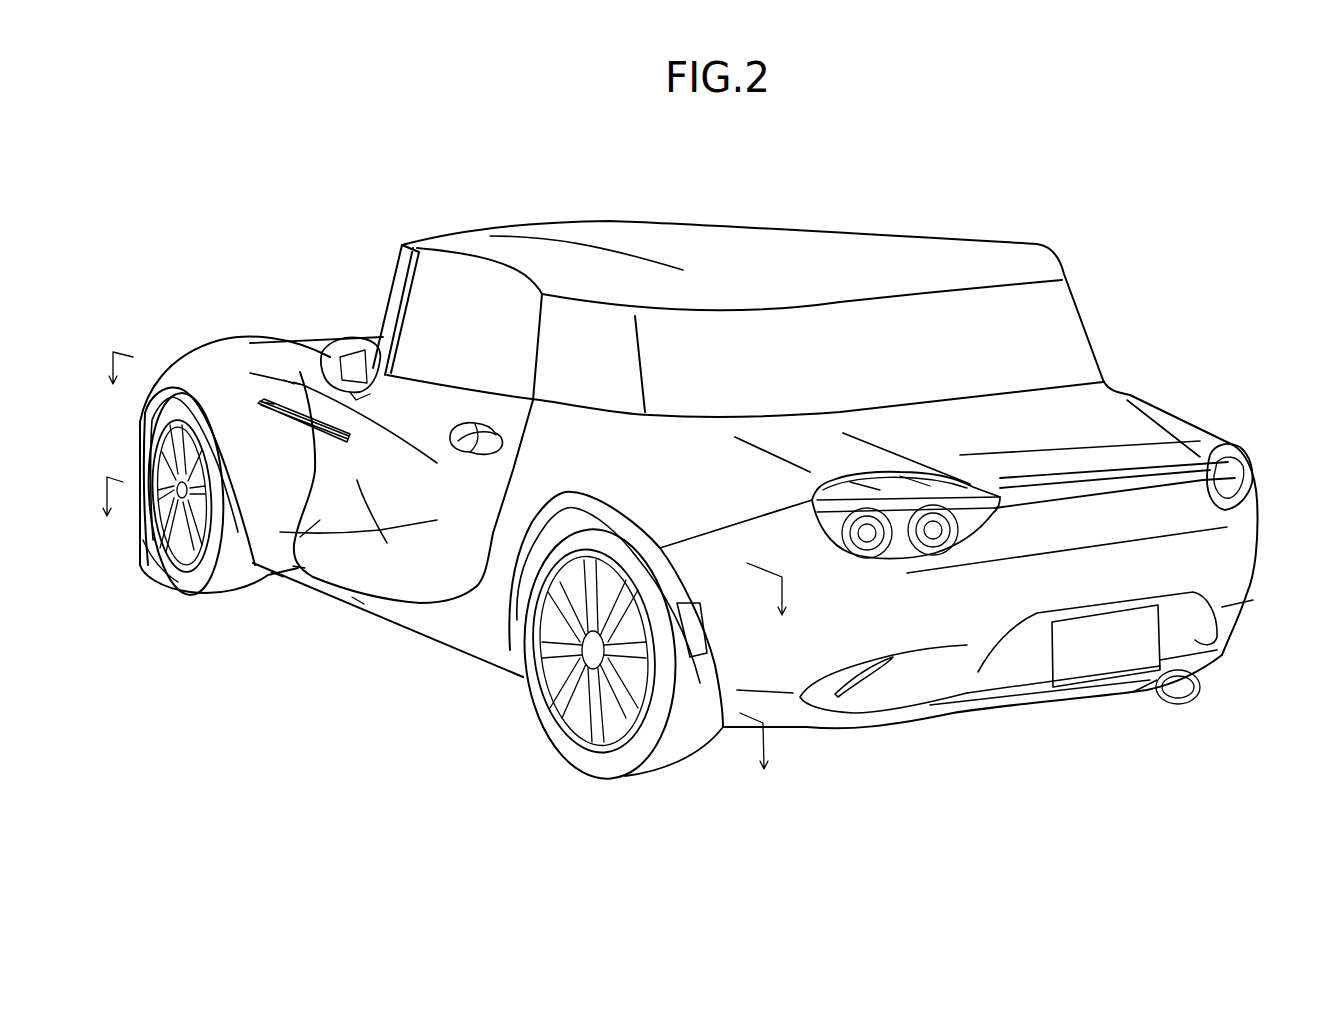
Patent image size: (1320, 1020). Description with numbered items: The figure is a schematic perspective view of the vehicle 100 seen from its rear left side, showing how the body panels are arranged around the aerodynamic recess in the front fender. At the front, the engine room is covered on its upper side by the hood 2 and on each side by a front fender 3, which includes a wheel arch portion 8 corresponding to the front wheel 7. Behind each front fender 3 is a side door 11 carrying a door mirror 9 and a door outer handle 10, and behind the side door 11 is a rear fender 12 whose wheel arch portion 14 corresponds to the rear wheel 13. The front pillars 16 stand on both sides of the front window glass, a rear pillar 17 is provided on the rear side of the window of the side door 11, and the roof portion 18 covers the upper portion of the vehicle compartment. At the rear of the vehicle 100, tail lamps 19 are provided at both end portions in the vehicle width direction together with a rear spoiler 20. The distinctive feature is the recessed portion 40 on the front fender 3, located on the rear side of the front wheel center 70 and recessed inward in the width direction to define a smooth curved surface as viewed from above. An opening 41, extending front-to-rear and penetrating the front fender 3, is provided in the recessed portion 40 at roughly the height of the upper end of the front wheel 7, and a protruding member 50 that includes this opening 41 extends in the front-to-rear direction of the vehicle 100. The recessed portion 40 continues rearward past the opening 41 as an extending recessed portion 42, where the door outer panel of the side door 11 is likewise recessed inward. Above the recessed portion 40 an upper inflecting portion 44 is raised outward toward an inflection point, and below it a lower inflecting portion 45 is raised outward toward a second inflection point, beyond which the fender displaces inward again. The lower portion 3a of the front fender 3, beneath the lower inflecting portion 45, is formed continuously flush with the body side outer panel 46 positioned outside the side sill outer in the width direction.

The vehicle 100 is at (1143, 238).
The hood 2 is at (343, 336).
The front fender 3 is at (210, 380).
The lower portion of the front fender 3a is at (277, 575).
The front wheel 7 is at (170, 587).
The wheel arch portion 8 is at (232, 493).
The door mirror 9 is at (386, 334).
The door outer handle 10 is at (480, 422).
The side door 11 is at (347, 588).
The rear fender 12 is at (661, 476).
The rear wheel 13 is at (547, 733).
The wheel arch portion 14 is at (577, 509).
The front pillar 16 is at (387, 277).
The rear pillar 17 is at (604, 360).
The roof portion 18 is at (763, 270).
The tail lamp 19 is at (897, 562).
The rear spoiler 20 is at (1072, 472).
The recessed portion 40 is at (287, 447).
The opening 41 is at (268, 405).
The extending recessed portion 42 is at (406, 487).
The upper inflecting portion 44 is at (289, 382).
The lower inflecting portion 45 is at (299, 570).
The body side outer panel 46 is at (358, 602).
The protruding member 50 is at (275, 428).
The front wheel center 70 is at (150, 537).